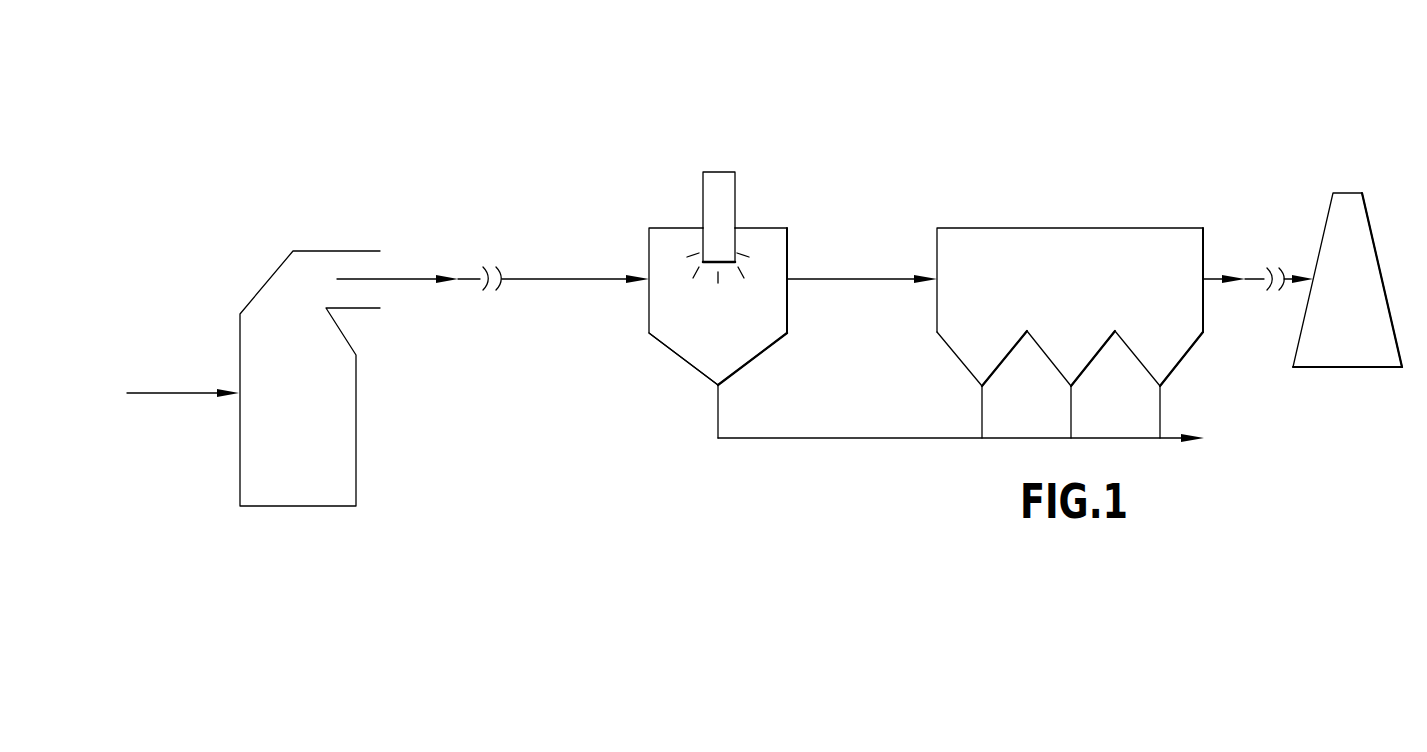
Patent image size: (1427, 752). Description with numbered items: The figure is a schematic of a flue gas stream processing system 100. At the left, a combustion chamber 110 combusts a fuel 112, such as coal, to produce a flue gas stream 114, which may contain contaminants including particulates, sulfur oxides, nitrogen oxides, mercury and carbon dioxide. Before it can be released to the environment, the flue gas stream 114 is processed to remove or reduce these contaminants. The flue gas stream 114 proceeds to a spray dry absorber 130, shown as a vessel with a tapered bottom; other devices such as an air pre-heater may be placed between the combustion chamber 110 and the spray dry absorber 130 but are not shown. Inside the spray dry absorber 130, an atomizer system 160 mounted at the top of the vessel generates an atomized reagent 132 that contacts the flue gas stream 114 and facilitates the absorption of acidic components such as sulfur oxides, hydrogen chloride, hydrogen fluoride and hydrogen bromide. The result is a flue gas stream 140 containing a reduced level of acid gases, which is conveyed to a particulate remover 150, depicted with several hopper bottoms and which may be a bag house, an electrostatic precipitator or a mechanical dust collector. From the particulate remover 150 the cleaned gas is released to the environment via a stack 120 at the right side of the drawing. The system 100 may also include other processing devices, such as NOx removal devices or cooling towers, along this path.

The flue gas stream processing system 100 is at (438, 122).
The combustion chamber 110 is at (277, 269).
The fuel 112 is at (178, 395).
The flue gas stream 114 is at (403, 279).
The stack 120 is at (1368, 215).
The spray dry absorber 130 is at (787, 242).
The atomized reagent 132 is at (670, 232).
The flue gas stream containing a reduced level of acid gases 140 is at (874, 279).
The particulate remover 150 is at (1022, 227).
The atomizer system 160 is at (736, 187).